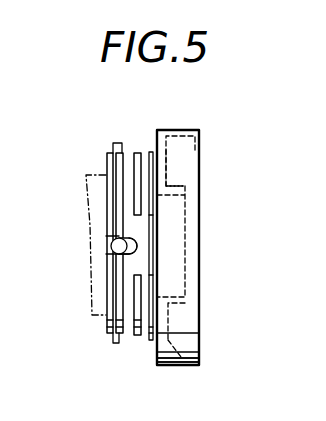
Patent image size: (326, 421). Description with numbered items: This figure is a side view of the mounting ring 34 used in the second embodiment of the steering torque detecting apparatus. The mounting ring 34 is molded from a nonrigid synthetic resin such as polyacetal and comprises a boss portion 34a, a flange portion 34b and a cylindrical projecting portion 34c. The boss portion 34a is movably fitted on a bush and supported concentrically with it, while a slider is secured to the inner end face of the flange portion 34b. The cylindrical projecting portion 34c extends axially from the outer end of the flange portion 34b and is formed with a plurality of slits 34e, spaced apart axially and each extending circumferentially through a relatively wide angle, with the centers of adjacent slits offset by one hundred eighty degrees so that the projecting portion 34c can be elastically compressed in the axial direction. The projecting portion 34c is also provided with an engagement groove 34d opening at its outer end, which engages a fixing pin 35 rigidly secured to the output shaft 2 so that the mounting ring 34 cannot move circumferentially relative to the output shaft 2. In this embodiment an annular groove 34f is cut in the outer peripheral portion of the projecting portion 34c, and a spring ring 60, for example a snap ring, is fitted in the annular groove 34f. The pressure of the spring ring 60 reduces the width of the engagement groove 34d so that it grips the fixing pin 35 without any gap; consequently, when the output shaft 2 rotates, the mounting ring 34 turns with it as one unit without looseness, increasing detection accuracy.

The mounting ring 34 is at (242, 130).
The boss portion 34a is at (183, 186).
The flange portion 34b is at (182, 363).
The cylindrical projecting portion 34c is at (122, 150).
The engagement groove 34d is at (123, 256).
The slits 34e is at (150, 343).
The annular groove 34f is at (108, 158).
The fixing pin 35 is at (111, 244).
The output shaft 2 is at (92, 318).
The spring ring 60 is at (115, 343).